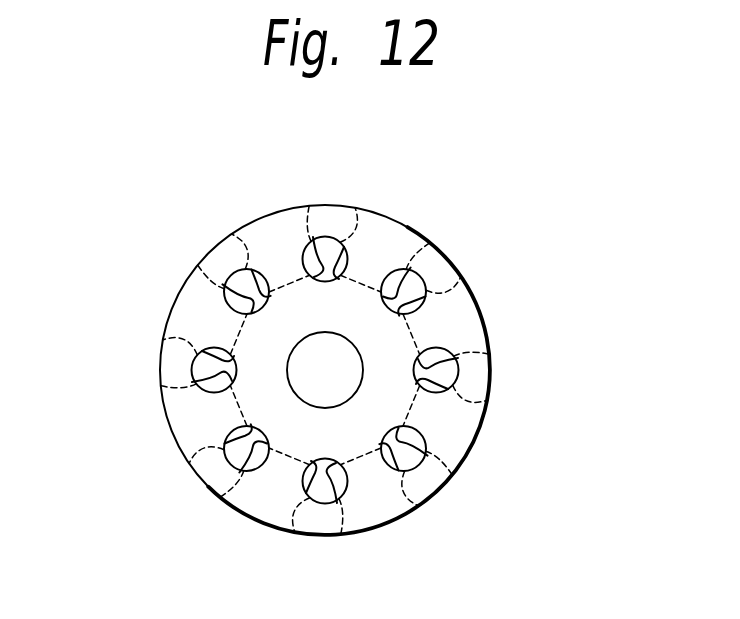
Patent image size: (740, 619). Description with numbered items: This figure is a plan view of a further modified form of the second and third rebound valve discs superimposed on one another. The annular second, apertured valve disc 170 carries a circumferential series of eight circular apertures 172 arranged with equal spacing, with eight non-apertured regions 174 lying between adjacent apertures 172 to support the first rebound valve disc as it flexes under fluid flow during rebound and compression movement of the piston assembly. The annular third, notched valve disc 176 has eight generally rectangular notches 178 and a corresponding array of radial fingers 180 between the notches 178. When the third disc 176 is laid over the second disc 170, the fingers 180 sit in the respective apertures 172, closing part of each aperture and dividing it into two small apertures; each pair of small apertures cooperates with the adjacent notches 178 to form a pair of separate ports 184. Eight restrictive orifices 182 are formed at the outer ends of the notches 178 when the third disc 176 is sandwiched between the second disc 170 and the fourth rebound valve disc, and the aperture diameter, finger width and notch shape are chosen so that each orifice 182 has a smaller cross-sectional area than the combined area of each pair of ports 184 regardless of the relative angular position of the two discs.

The second apertured valve disc 170 is at (385, 248).
The circular apertures 172 is at (198, 352).
The non-apertured regions 174 is at (433, 325).
The third notched valve disc 176 is at (393, 472).
The notches 178 is at (364, 222).
The radial fingers 180 is at (317, 505).
The restrictive orifices 182 is at (267, 215).
The ports 184 is at (247, 271).